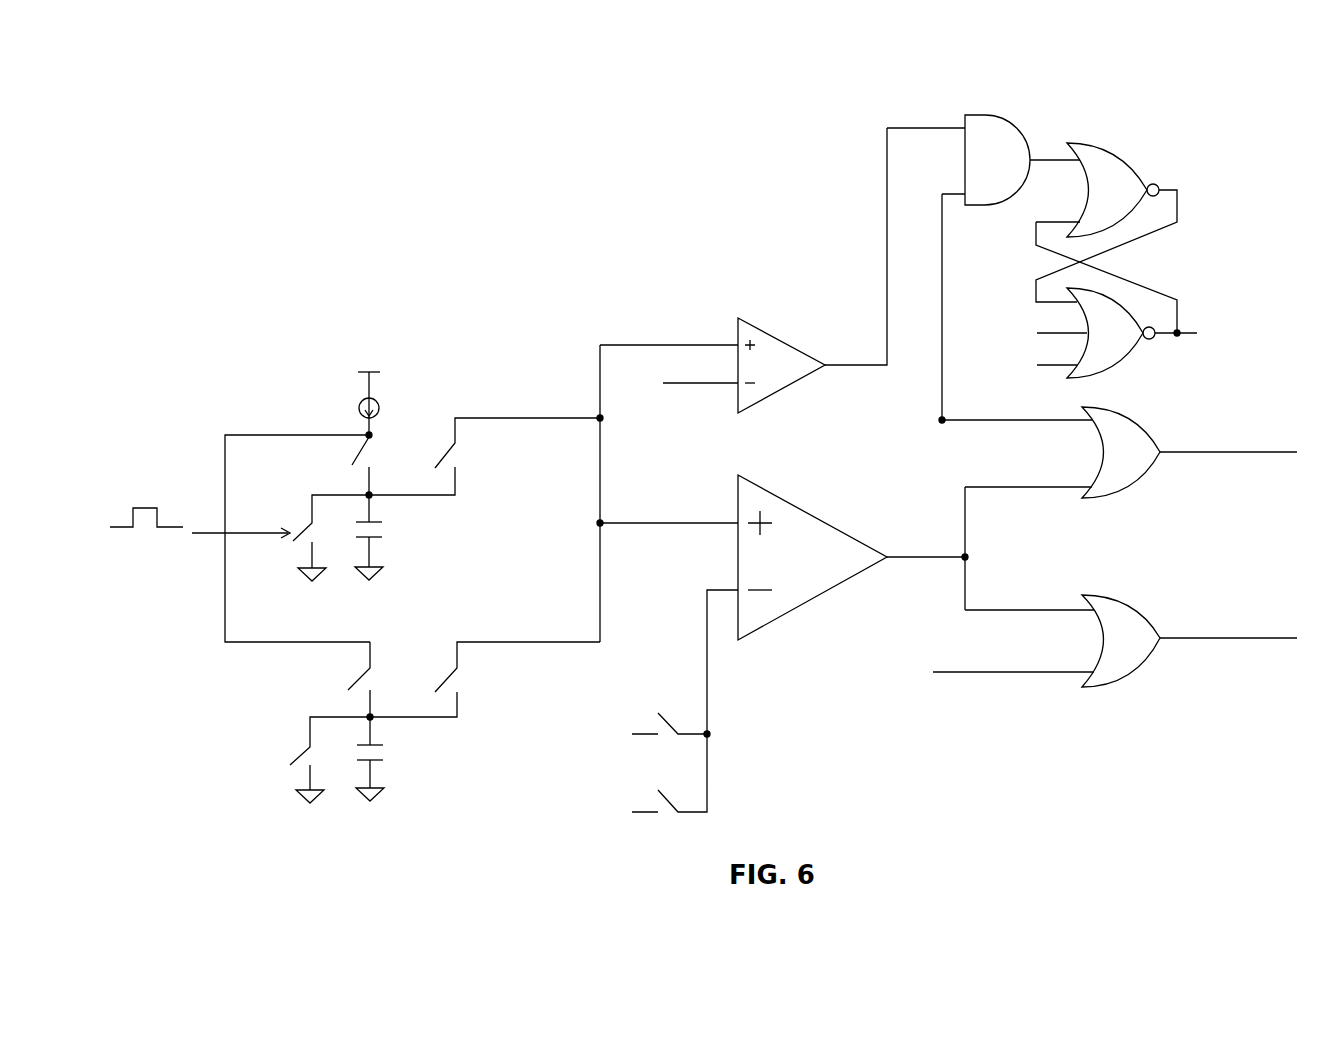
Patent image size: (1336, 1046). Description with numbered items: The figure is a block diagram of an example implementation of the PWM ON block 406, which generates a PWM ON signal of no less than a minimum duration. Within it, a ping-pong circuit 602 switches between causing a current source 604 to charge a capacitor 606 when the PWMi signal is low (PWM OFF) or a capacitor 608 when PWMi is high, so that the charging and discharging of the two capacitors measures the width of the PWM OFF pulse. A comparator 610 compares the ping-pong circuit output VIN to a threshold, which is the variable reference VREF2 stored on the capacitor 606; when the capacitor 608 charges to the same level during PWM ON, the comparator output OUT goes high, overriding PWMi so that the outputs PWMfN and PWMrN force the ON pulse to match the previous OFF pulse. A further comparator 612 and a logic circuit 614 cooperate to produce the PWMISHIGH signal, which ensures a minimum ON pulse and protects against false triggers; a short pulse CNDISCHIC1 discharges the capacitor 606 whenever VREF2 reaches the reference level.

The PWM ON block 406 is at (613, 102).
The ping-pong circuit 602 is at (323, 420).
The current source 604 is at (387, 404).
The capacitor 606 is at (393, 551).
The capacitor 608 is at (397, 757).
The comparator 610 is at (787, 623).
The comparator 612 is at (797, 335).
The logic circuit 614 is at (1198, 217).